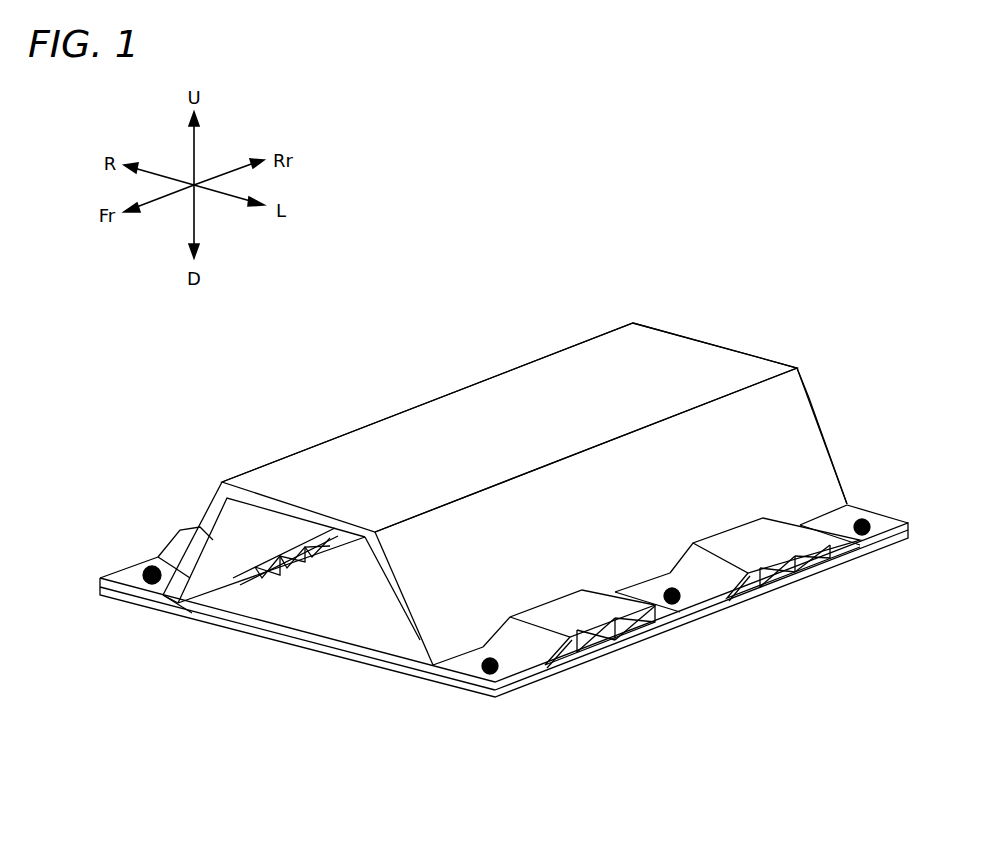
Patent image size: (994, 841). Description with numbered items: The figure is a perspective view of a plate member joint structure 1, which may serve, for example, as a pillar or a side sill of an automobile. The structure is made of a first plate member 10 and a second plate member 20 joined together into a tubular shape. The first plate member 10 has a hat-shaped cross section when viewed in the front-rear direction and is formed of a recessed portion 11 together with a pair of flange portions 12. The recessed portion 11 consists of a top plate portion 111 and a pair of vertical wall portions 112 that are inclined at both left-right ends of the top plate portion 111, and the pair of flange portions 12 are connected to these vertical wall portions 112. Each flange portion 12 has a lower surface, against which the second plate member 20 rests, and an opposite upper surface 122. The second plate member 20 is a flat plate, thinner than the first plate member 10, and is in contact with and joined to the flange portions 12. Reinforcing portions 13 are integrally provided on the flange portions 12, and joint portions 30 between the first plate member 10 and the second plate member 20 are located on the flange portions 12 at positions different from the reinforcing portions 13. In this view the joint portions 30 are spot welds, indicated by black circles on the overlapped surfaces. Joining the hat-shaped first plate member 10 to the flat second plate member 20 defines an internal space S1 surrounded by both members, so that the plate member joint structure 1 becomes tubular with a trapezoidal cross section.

The plate member joint structure 1 is at (768, 264).
The first plate member 10 is at (520, 365).
The recessed portion 11 is at (440, 420).
The top plate portion 111 is at (247, 495).
The vertical wall portion 112 is at (198, 565).
The flange portion 12 is at (104, 578).
The upper surface 122 is at (128, 566).
The reinforcing portion 13 is at (182, 526).
The second plate member 20 is at (352, 660).
The joint portion 30 is at (152, 586).
The internal space S1 is at (287, 612).